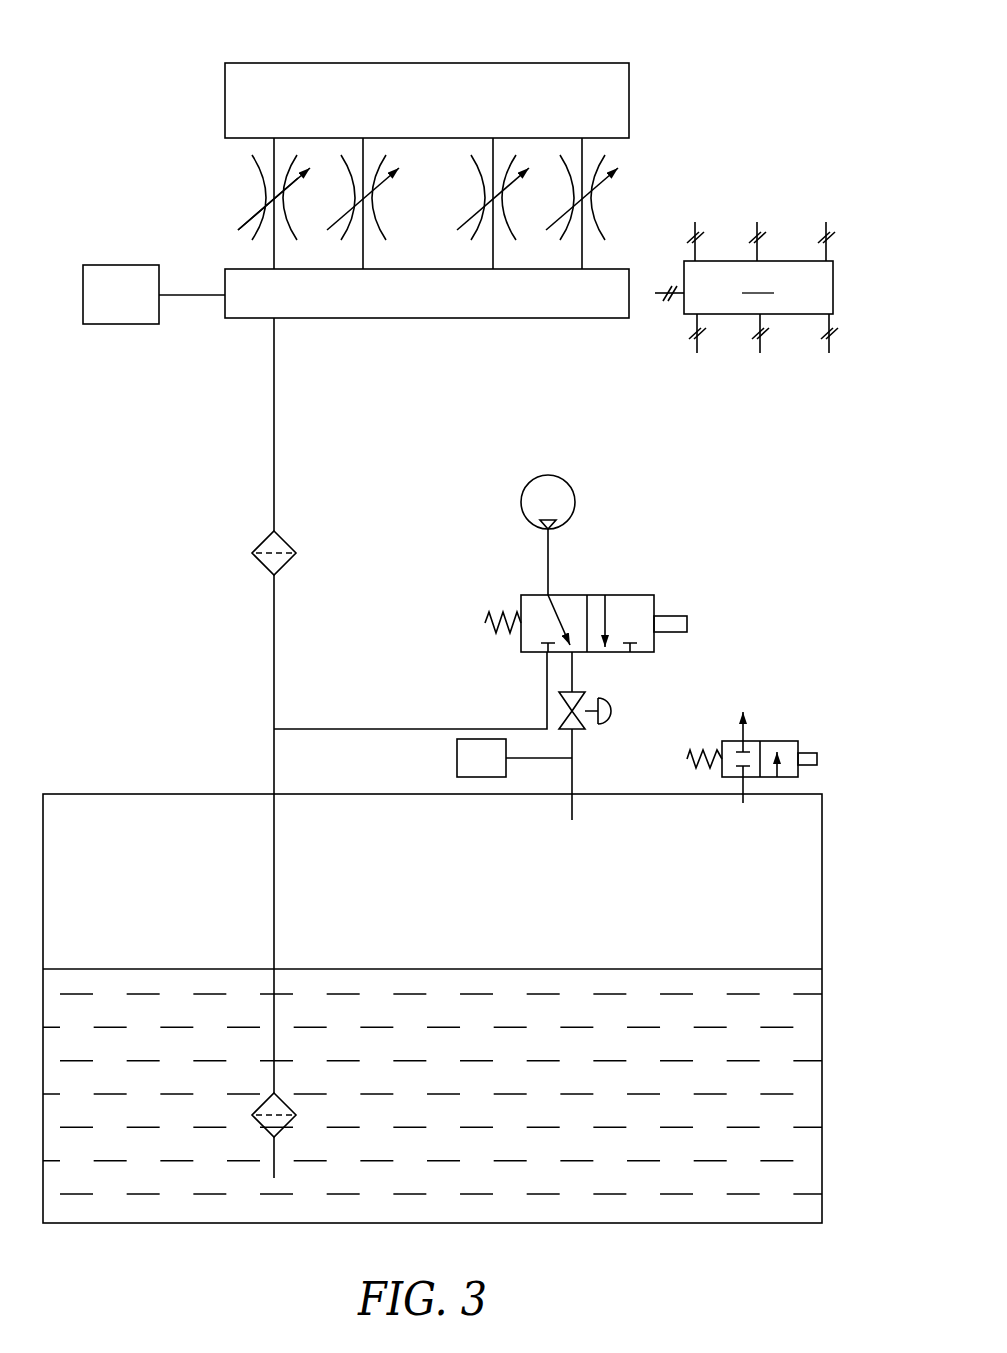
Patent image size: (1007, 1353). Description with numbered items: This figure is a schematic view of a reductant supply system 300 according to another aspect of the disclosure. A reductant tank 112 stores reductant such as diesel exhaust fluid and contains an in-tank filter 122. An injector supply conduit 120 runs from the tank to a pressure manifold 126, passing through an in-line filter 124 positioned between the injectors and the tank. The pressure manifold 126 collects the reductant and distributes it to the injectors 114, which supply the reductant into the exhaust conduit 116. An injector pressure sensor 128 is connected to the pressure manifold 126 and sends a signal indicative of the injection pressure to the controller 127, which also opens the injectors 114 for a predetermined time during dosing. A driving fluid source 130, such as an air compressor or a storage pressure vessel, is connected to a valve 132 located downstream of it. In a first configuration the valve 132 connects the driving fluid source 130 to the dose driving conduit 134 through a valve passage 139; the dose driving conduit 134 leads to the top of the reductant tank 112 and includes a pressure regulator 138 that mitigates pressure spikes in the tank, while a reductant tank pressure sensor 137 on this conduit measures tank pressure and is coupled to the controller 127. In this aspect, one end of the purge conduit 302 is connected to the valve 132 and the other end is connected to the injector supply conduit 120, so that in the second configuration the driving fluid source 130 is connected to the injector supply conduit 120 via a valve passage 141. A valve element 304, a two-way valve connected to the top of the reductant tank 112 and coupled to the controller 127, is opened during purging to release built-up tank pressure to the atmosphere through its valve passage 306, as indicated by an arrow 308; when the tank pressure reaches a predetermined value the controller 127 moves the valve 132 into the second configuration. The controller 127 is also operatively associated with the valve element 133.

The reductant supply system 300 is at (714, 60).
The exhaust conduit 116 is at (411, 108).
The pressure manifold 126 is at (411, 306).
The injector 114 is at (220, 170).
The injector pressure sensor 128 is at (105, 265).
The controller 127 is at (746, 287).
The valve element 133 is at (760, 370).
The injector supply conduit 120 is at (274, 422).
The in-line filter 124 is at (262, 566).
The in-tank filter 122 is at (285, 1100).
The driving fluid source 130 is at (573, 490).
The valve 132 is at (654, 610).
The valve passage 139 is at (550, 613).
The valve passage 141 is at (605, 618).
The purge conduit 302 is at (435, 729).
The pressure regulator 138 is at (612, 711).
The dose driving conduit 134 is at (572, 782).
The reductant tank pressure sensor 137 is at (457, 757).
The valve element 304 is at (798, 745).
The arrow 308 is at (750, 710).
The valve passage 306 is at (792, 758).
The reductant tank 112 is at (775, 1223).